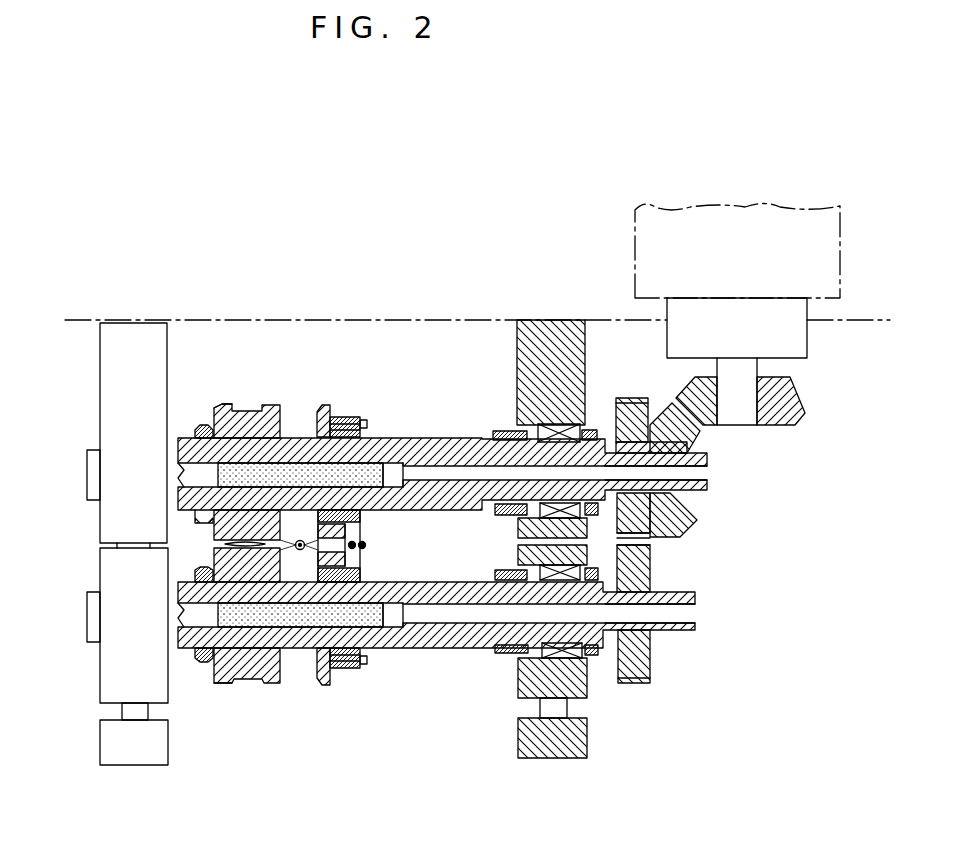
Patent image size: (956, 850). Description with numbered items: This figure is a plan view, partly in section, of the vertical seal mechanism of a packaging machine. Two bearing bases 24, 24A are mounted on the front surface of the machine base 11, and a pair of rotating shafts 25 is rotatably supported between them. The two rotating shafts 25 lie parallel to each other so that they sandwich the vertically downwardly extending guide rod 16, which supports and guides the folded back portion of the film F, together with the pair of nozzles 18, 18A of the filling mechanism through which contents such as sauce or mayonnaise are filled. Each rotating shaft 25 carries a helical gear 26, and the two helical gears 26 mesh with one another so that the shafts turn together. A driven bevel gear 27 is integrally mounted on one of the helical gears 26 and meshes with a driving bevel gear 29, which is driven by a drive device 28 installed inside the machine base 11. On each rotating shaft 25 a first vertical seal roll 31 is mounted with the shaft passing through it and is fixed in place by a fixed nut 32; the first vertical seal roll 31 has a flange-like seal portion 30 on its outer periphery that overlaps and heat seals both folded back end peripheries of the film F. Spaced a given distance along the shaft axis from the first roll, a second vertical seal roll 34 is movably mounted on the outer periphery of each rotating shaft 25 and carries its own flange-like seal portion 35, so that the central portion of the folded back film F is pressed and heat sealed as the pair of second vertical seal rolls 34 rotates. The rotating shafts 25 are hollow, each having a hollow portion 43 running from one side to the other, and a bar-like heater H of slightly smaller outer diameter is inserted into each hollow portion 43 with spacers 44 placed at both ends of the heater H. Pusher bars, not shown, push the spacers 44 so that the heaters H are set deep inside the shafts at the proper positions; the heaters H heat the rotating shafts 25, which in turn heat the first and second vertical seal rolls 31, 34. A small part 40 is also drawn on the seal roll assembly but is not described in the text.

The machine base 11 is at (252, 318).
The guide rod 16 is at (365, 548).
The nozzle 18 is at (300, 552).
The nozzle 18A is at (355, 543).
The bearing base 24 is at (110, 388).
The bearing base 24A is at (112, 685).
The rotating shaft 25 is at (476, 450).
The helical gear 26 is at (627, 406).
The driven bevel gear 27 is at (686, 530).
The drive device 28 is at (655, 236).
The driving bevel gear 29 is at (793, 428).
The seal portion 30 is at (270, 404).
The first vertical seal roll 31 is at (236, 406).
The fixed nut 32 is at (203, 424).
The second vertical seal roll 34 is at (348, 415).
The seal portion 35 is at (326, 404).
The screw 40 is at (370, 424).
The hollow portion 43 is at (643, 473).
The spacer 44 is at (220, 470).
The heater H is at (312, 470).
The film F is at (306, 524).